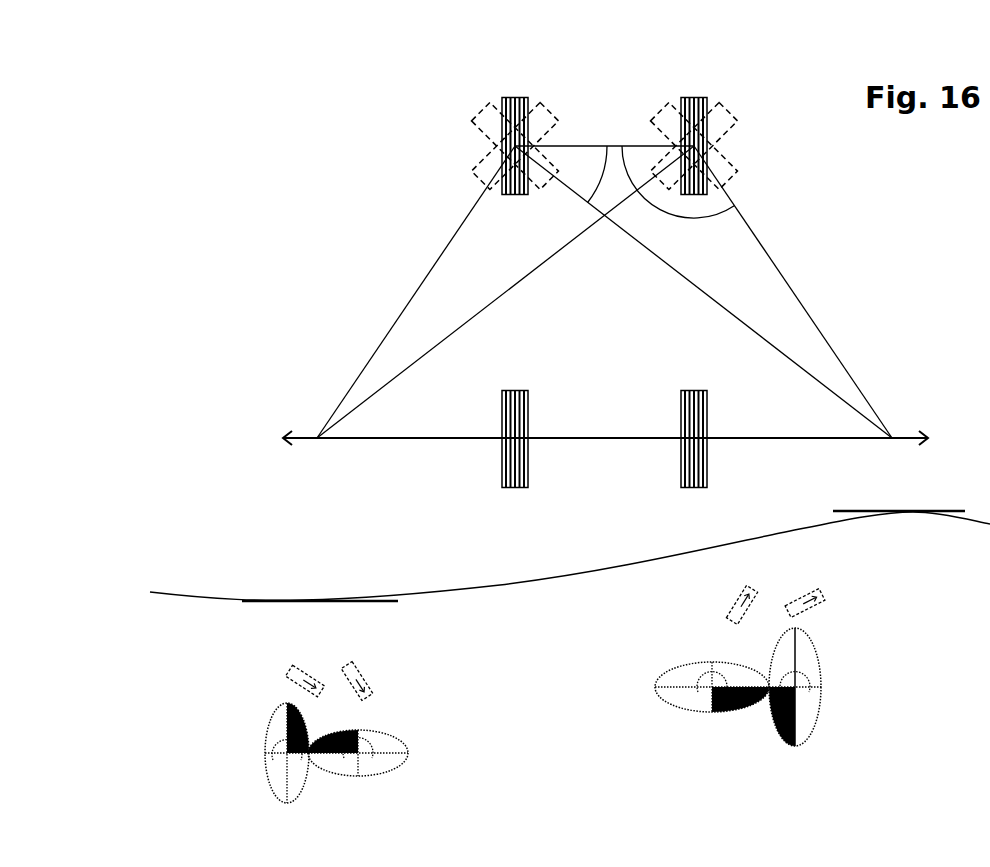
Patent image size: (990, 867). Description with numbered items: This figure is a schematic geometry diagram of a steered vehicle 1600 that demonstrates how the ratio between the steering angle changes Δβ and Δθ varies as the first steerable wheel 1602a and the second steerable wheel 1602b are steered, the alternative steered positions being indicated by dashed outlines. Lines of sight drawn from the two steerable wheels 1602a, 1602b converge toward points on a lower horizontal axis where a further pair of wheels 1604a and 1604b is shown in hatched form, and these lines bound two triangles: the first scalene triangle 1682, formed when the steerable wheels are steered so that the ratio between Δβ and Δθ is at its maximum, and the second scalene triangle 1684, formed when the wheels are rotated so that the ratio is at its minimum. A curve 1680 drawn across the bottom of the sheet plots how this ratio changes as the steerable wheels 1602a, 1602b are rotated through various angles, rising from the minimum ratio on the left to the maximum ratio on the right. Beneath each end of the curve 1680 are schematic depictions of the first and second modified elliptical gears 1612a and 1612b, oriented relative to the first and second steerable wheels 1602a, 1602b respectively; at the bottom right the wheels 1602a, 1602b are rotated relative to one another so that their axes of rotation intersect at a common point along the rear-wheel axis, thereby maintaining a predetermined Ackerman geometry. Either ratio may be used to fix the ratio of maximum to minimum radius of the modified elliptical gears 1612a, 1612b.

The vehicle 1600 is at (340, 163).
The first steerable wheel 1602a is at (502, 142).
The second steerable wheel 1602b is at (703, 108).
The first sensor of the second pair 1604a is at (500, 413).
The second sensor of the second pair 1604b is at (708, 410).
The first modified elliptical gear 1612a is at (267, 775).
The second modified elliptical gear 1612b is at (408, 755).
The curve 1680 is at (267, 570).
The first scalene triangle 1682 is at (770, 258).
The second scalene triangle 1684 is at (407, 302).